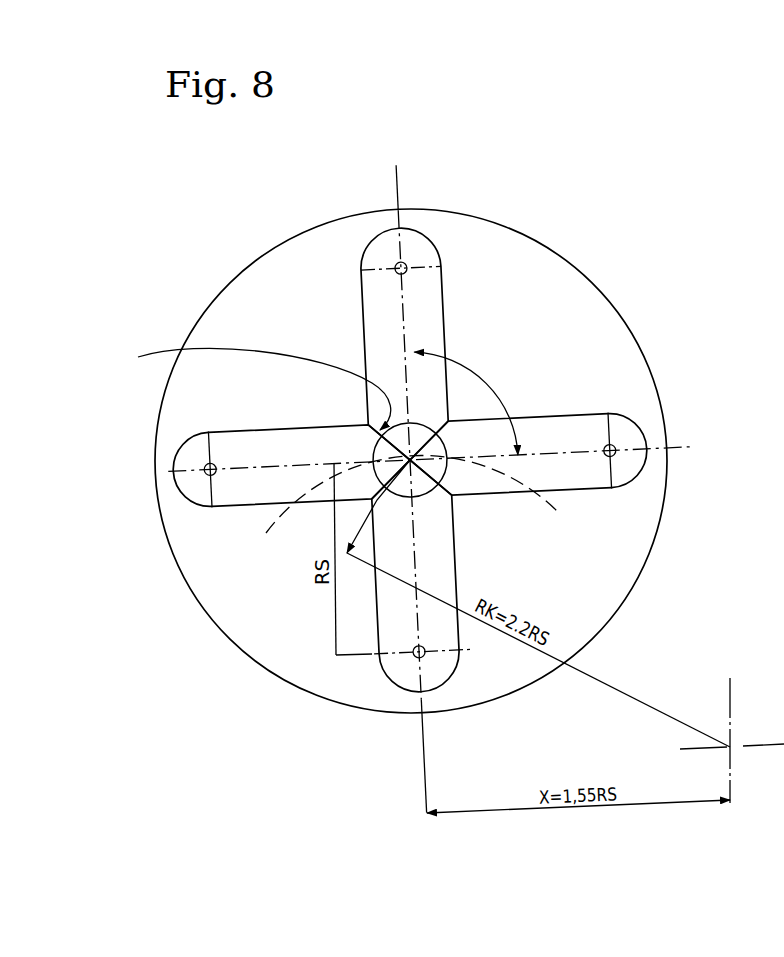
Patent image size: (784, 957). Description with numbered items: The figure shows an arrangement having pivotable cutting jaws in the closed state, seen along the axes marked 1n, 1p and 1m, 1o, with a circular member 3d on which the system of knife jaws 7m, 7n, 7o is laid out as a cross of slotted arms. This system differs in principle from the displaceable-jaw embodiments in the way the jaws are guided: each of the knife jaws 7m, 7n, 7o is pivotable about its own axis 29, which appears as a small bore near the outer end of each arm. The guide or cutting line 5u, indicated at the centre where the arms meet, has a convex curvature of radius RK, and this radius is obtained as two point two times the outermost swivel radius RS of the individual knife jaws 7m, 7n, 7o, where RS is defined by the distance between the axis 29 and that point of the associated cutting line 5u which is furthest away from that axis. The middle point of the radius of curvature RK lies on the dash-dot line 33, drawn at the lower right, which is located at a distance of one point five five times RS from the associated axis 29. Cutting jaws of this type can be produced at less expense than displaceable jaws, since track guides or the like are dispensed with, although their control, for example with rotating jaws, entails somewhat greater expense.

The axis 29 is at (403, 266).
The knife jaw 7m is at (449, 307).
The knife jaw 7n is at (582, 497).
The knife jaw 7o is at (370, 598).
The disk 3d is at (475, 395).
The guide or cutting line 5u is at (246, 389).
The dash-dot line 33 is at (732, 727).
The axis 1n is at (423, 472).
The axis 1p is at (423, 472).
The axis 1m is at (465, 463).
The axis 1o is at (465, 463).